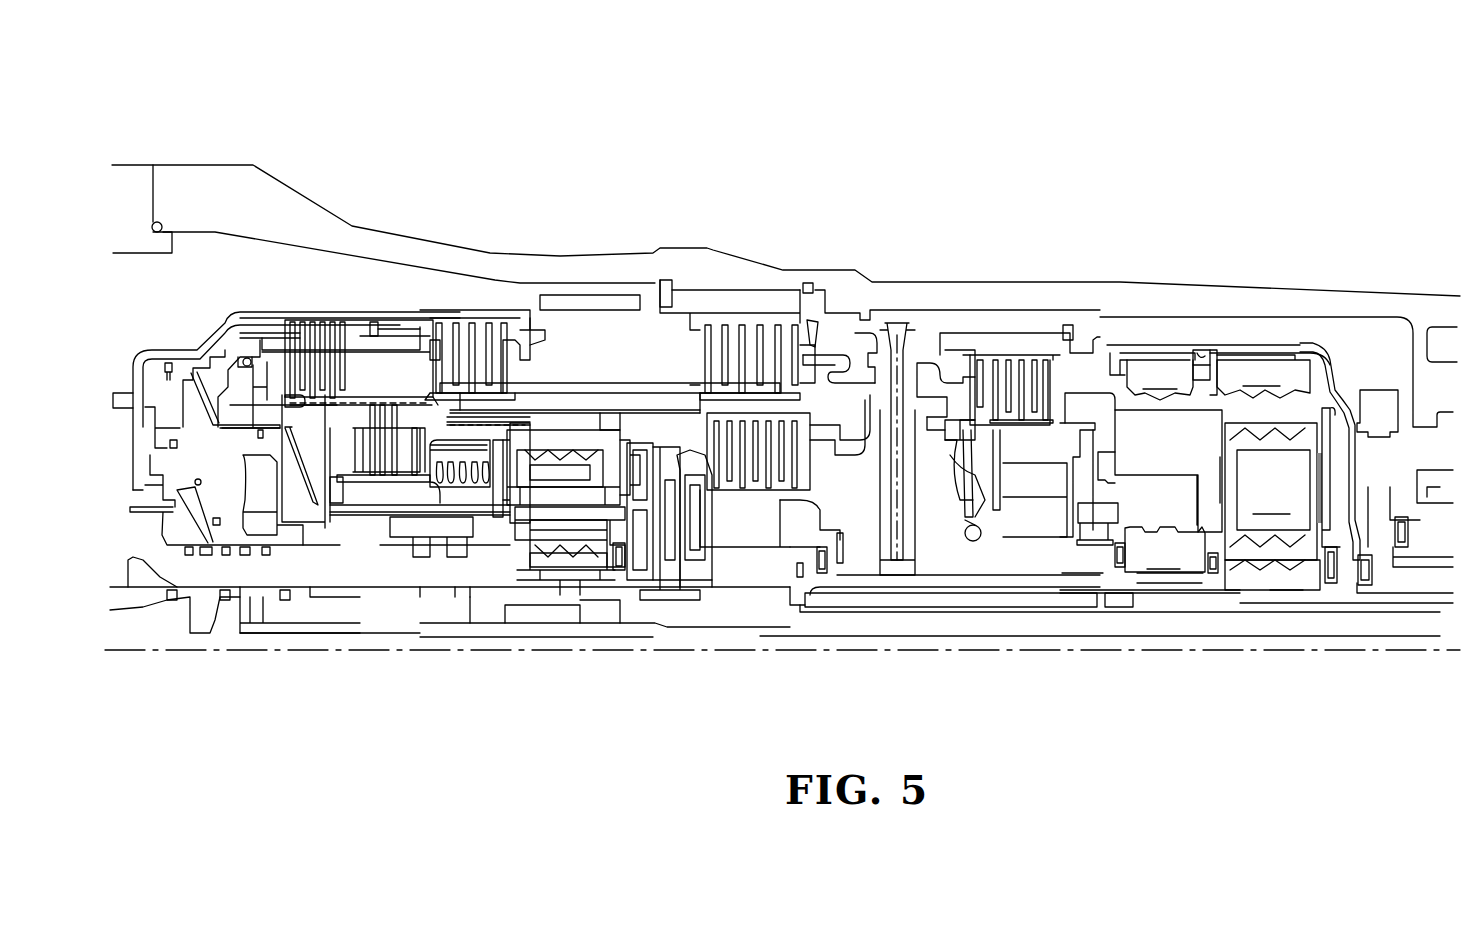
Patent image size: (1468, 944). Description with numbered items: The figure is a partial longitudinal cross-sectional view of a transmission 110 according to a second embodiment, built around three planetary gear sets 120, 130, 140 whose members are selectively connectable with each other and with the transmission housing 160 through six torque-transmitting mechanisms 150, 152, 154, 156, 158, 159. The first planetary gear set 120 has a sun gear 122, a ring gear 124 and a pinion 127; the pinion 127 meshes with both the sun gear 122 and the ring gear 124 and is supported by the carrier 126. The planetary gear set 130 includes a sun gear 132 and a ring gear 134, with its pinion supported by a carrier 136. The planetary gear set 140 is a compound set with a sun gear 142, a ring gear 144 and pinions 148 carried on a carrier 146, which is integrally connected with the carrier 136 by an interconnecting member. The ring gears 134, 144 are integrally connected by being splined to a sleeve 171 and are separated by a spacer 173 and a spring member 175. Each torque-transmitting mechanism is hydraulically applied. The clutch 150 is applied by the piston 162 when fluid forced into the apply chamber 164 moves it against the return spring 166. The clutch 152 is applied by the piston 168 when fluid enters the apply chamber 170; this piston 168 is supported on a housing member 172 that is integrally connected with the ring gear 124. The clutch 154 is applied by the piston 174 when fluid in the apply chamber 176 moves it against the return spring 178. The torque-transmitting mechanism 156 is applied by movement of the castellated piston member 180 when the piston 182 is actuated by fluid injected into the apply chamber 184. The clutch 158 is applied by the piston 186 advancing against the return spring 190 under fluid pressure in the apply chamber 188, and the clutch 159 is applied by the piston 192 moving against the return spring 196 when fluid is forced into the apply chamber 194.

The transmission 110 is at (278, 118).
The first planetary gear set 120 is at (577, 410).
The sun gear 122 is at (587, 560).
The ring gear 124 is at (593, 443).
The carrier 126 is at (505, 515).
The pinion 127 is at (567, 470).
The planetary gear set 130 is at (1153, 337).
The sun gear 132 is at (1171, 550).
The ring gear 134 is at (1160, 378).
The carrier 136 is at (1103, 383).
The compound planetary gear set 140 is at (1277, 337).
The sun gear 142 is at (1272, 575).
The ring gear 144 is at (1261, 375).
The carrier 146 is at (1323, 480).
The pinions 148 is at (1273, 491).
The clutch 150 is at (320, 298).
The clutch 152 is at (410, 410).
The clutch 154 is at (728, 300).
The torque-transmitting mechanism 156 is at (493, 300).
The clutch 158 is at (760, 510).
The clutch 159 is at (1007, 337).
The transmission housing 160 is at (620, 275).
The piston 162 is at (247, 358).
The apply chamber 164 is at (245, 460).
The return spring 166 is at (287, 427).
The piston 168 is at (450, 447).
The apply chamber 170 is at (503, 440).
The sleeve 171 is at (1313, 350).
The housing member 172 is at (413, 527).
The spacer 173 is at (1212, 360).
The spring member 175 is at (1200, 350).
The piston 174 is at (840, 355).
The apply chamber 176 is at (872, 323).
The return spring 178 is at (822, 350).
The castellated piston member 180 is at (392, 335).
The piston 182 is at (165, 383).
The apply chamber 184 is at (147, 377).
The piston 186 is at (677, 457).
The apply chamber 188 is at (638, 453).
The return spring 190 is at (662, 520).
The piston 192 is at (968, 357).
The apply chamber 194 is at (917, 353).
The return spring 196 is at (973, 473).